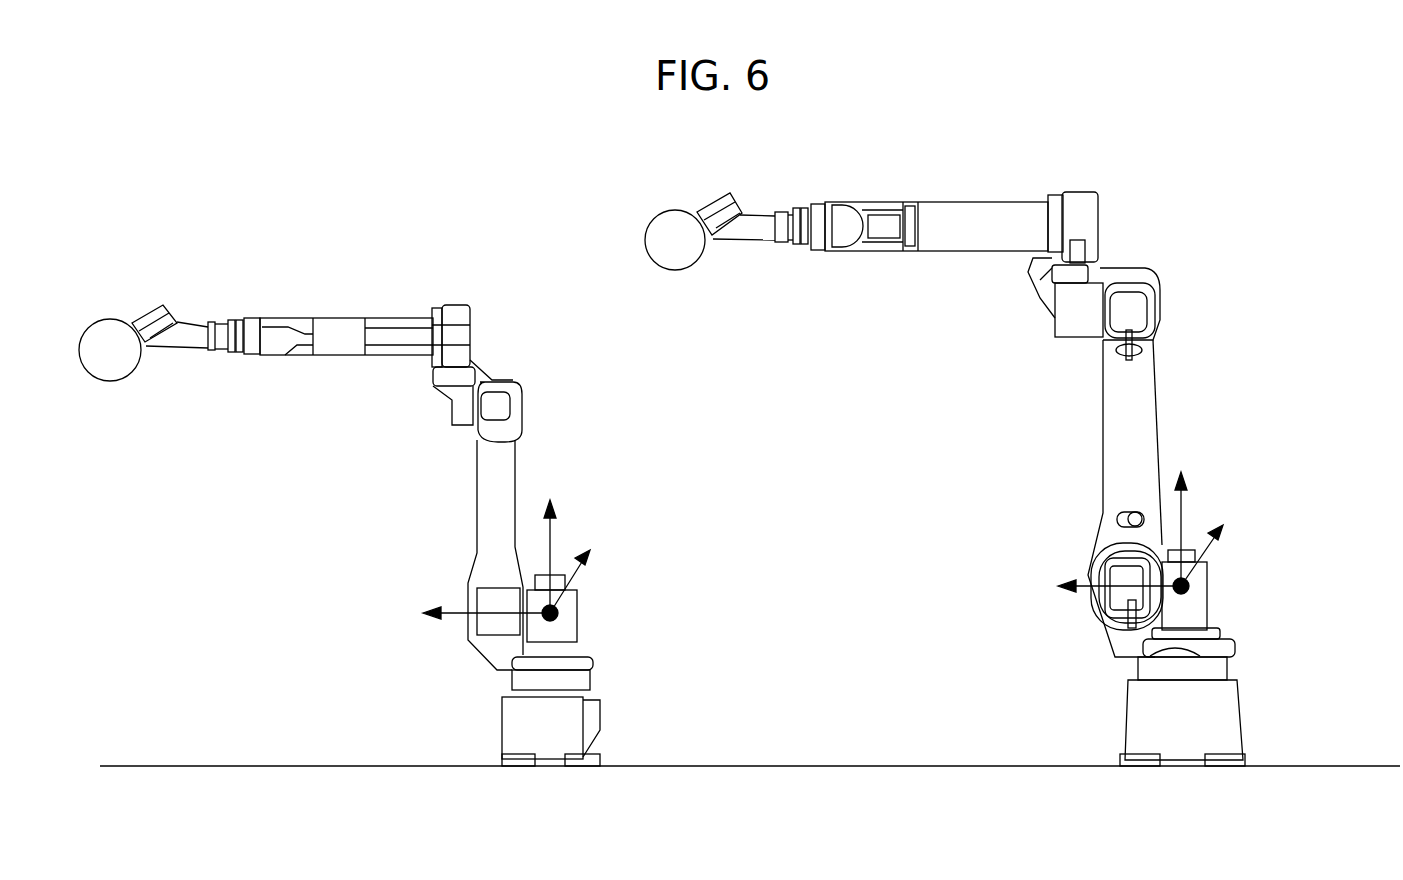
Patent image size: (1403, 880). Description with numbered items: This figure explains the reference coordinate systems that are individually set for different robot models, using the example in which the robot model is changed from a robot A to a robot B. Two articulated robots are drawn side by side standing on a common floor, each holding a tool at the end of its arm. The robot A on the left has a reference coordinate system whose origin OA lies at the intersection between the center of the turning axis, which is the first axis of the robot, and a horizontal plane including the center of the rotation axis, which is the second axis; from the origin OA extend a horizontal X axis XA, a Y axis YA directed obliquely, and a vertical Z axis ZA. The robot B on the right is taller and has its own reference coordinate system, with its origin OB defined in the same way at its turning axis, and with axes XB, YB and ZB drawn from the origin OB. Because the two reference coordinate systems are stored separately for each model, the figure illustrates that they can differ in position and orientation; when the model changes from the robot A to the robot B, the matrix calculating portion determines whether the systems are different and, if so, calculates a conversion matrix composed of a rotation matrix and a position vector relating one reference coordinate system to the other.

The robot A is at (334, 318).
The robot B is at (984, 202).
The origin OA is at (568, 621).
The origin OB is at (1200, 594).
The X axis XA is at (471, 615).
The Y axis YA is at (579, 567).
The Z axis ZA is at (551, 541).
The X axis XB is at (1103, 589).
The Y axis YB is at (1211, 541).
The Z axis ZB is at (1183, 514).